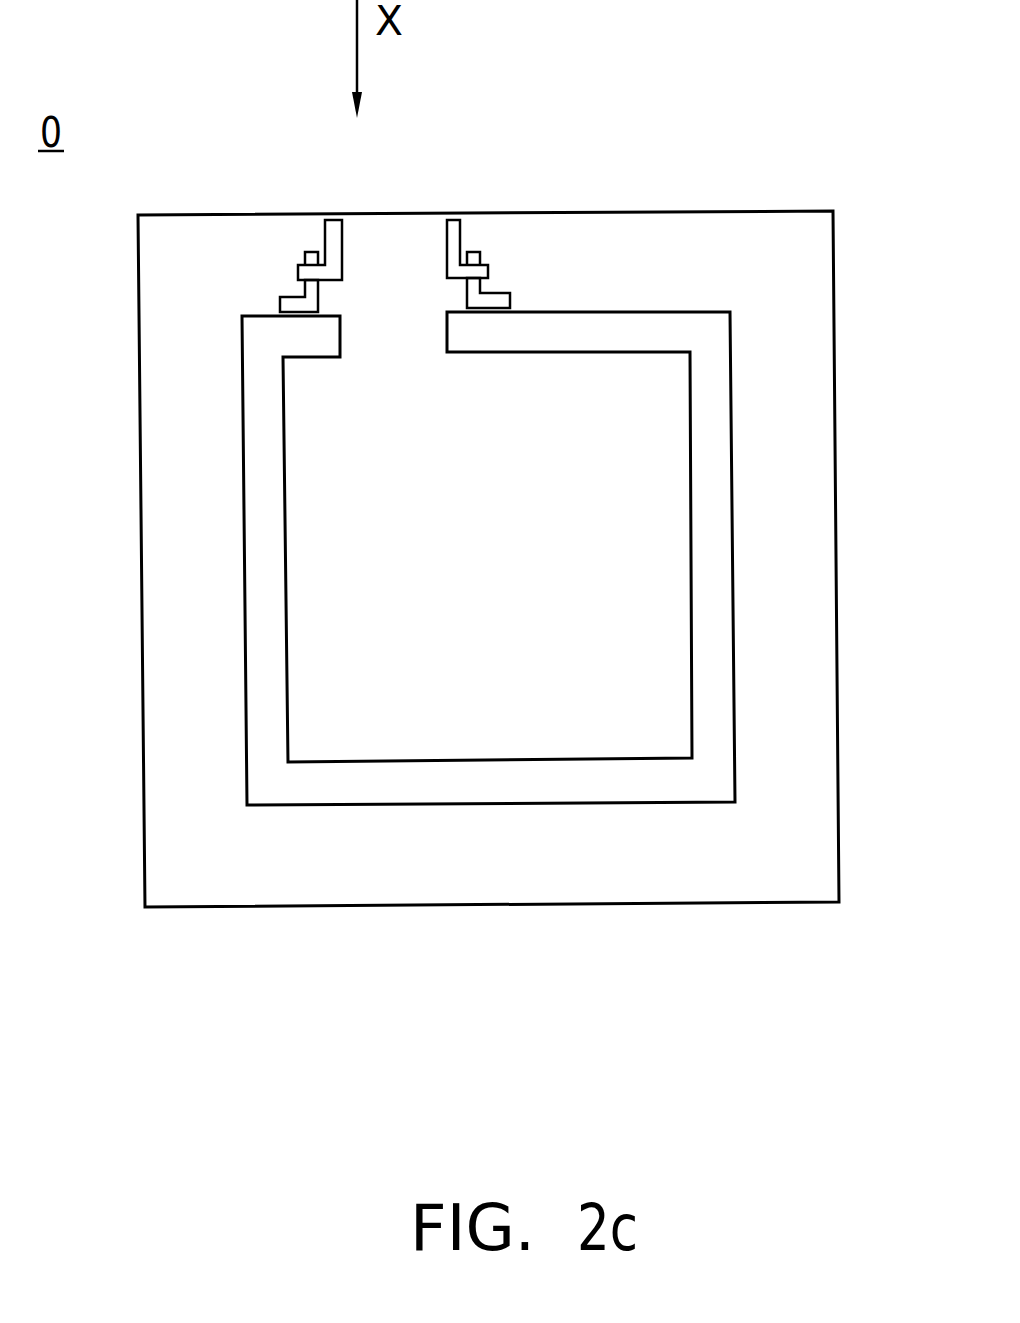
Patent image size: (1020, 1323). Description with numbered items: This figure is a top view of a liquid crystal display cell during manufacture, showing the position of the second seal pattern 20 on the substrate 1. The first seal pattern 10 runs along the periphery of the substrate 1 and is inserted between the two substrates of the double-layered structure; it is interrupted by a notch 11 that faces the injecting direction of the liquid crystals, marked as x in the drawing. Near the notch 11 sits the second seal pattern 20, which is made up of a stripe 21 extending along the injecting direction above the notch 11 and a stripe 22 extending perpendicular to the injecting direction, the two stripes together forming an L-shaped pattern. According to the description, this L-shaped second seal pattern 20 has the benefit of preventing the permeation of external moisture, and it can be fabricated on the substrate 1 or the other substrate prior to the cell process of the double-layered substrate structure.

The substrate 1 is at (697, 225).
The first seal pattern 10 is at (710, 403).
The notch 11 is at (387, 228).
The second seal pattern 20 is at (297, 247).
The stripe 21 is at (337, 220).
The stripe 22 is at (278, 298).